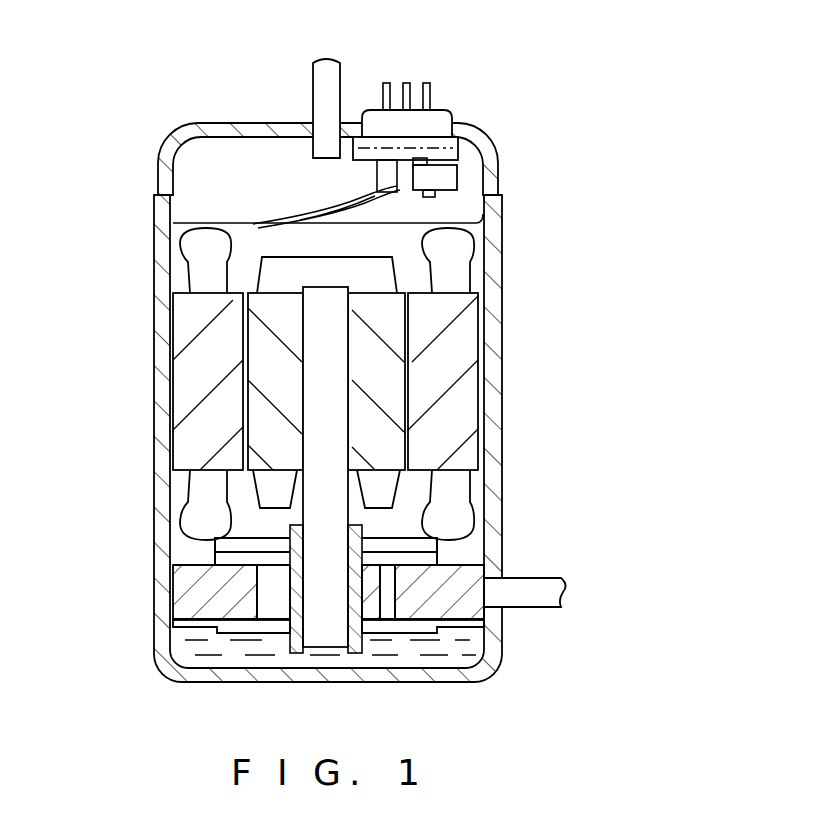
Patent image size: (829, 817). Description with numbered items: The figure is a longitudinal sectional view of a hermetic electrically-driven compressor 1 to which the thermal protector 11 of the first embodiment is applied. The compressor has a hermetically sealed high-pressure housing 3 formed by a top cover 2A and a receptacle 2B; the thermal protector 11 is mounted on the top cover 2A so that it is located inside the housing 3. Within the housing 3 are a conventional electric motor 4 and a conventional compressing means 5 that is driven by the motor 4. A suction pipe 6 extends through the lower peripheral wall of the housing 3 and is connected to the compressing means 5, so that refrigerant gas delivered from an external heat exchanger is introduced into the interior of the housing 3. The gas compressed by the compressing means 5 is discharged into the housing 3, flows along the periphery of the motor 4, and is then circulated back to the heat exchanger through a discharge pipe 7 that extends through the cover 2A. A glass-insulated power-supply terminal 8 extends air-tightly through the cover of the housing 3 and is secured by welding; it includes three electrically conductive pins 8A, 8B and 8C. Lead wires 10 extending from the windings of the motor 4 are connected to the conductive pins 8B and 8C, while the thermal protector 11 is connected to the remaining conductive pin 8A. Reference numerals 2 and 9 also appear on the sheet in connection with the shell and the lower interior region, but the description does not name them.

The hermetic electrically-driven compressor 1 is at (353, 344).
The sealed casing 2 is at (328, 402).
The top cover 2A is at (157, 158).
The receptacle 2B is at (152, 486).
The housing 3 is at (152, 512).
The electric motor 4 is at (456, 410).
The compressing means 5 is at (457, 568).
The suction pipe 6 is at (538, 600).
The discharge pipe 7 is at (320, 103).
The power-supply terminal 8 is at (442, 83).
The conductive pin 8A is at (402, 80).
The conductive pin 8B is at (386, 100).
The conductive pin 8C is at (430, 83).
The lubricating oil 9 is at (166, 655).
The lead wires 10 is at (328, 209).
The thermal protector 11 is at (458, 182).